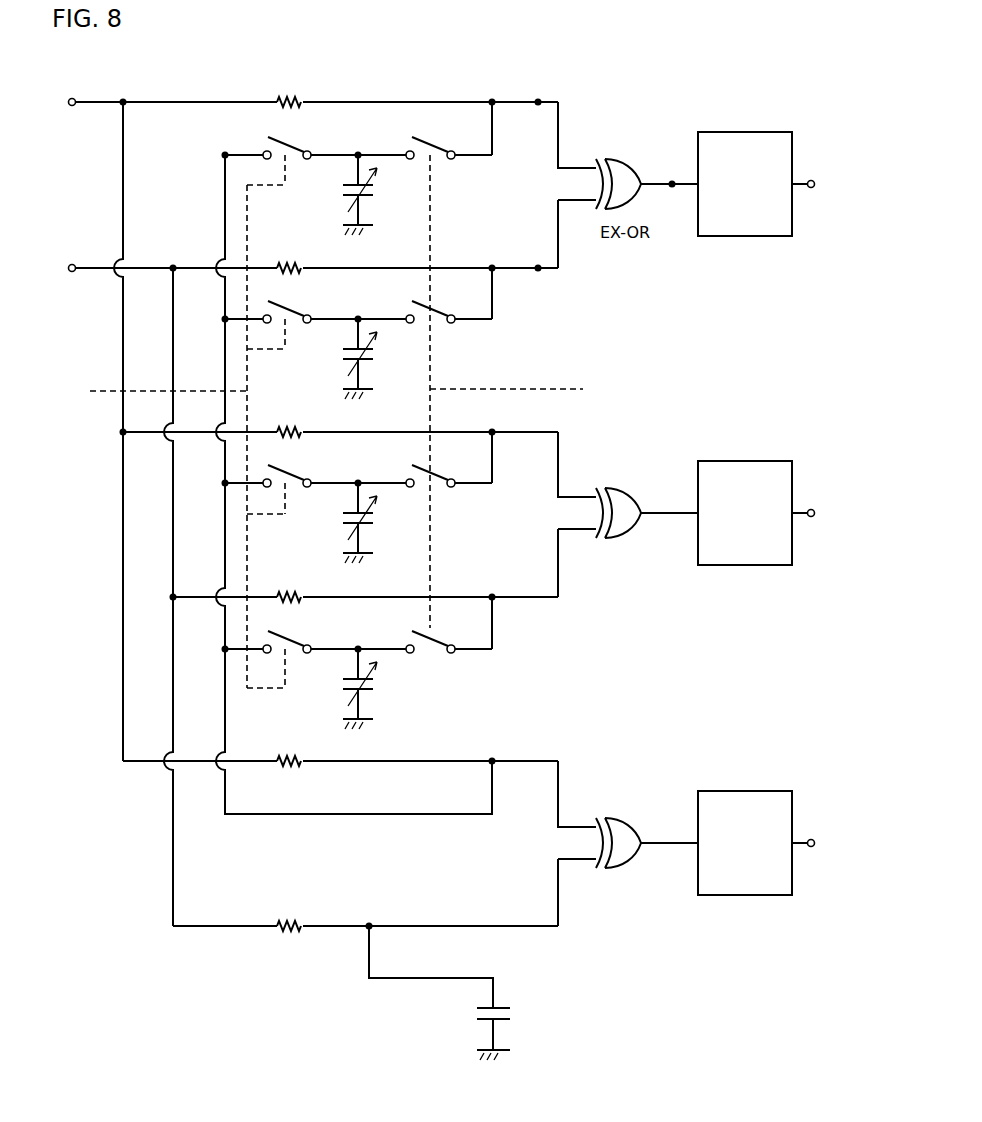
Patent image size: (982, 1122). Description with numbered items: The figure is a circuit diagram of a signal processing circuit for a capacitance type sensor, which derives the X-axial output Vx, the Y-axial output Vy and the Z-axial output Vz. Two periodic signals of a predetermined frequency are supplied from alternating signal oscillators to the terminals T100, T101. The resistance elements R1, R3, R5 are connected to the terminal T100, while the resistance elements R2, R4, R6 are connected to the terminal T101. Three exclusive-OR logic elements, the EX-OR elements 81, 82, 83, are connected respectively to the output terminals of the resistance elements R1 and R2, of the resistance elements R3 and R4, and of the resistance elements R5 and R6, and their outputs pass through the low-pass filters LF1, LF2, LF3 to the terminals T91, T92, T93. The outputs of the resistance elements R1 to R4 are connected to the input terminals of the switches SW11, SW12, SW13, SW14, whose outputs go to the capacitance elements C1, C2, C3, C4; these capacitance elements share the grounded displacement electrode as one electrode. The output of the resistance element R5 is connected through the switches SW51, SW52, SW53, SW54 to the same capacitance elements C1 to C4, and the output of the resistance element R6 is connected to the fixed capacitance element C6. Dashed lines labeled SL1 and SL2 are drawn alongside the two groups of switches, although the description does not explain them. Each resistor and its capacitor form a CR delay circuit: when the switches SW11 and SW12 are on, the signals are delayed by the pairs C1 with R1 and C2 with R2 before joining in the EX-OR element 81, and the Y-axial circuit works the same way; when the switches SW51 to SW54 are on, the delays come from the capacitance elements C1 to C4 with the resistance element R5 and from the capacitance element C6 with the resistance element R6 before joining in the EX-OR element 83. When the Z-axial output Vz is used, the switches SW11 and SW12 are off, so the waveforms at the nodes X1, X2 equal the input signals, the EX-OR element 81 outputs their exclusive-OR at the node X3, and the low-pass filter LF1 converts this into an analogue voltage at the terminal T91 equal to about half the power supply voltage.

The terminal T100 is at (46, 102).
The terminal T101 is at (46, 268).
The resistance element R1 is at (289, 92).
The resistance element R2 is at (289, 258).
The resistance element R3 is at (289, 422).
The resistance element R4 is at (289, 587).
The resistance element R5 is at (289, 751).
The resistance element R6 is at (289, 915).
The switch SW51 is at (315, 159).
The switch SW52 is at (315, 323).
The switch SW53 is at (315, 487).
The switch SW54 is at (315, 653).
The switch SW11 is at (449, 159).
The switch SW12 is at (449, 323).
The switch SW13 is at (449, 487).
The switch SW14 is at (449, 653).
The capacitance element C1 is at (373, 195).
The capacitance element C2 is at (373, 359).
The capacitance element C3 is at (373, 523).
The capacitance element C4 is at (373, 689).
The fixed capacitance element C6 is at (510, 1034).
The node X1 is at (537, 91).
The node X2 is at (537, 279).
The node X3 is at (672, 173).
The switch control line SL1 is at (526, 393).
The switch control line SL2 is at (148, 394).
The EX-OR element 81 is at (628, 160).
The EX-OR element 82 is at (628, 490).
The EX-OR element 83 is at (628, 820).
The low-pass filter LF1 is at (745, 173).
The low-pass filter LF2 is at (745, 502).
The low-pass filter LF3 is at (745, 832).
The terminal T91 is at (814, 204).
The terminal T92 is at (814, 533).
The terminal T93 is at (814, 863).
The X-axial output Vx is at (835, 184).
The Y-axial output Vy is at (835, 513).
The Z-axial output Vz is at (834, 843).